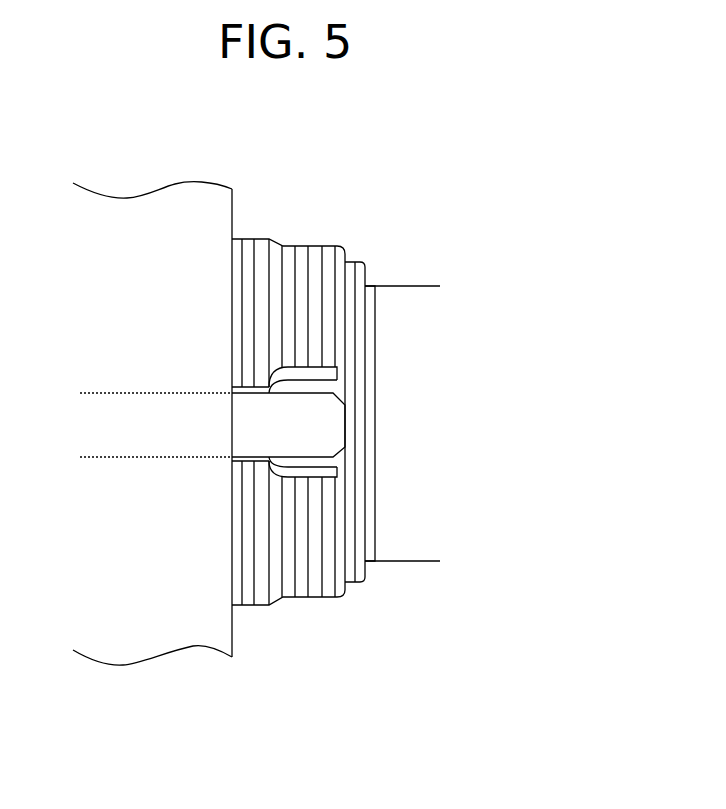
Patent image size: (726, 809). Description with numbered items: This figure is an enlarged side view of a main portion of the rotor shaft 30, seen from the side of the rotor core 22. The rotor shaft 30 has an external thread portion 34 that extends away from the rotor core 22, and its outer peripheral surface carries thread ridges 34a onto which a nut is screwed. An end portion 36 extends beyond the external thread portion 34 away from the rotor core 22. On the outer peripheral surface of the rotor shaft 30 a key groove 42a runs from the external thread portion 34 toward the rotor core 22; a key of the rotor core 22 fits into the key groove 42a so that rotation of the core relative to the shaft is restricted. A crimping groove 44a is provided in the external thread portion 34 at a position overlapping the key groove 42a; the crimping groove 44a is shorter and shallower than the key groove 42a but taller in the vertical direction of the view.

The rotor core 22 is at (158, 232).
The rotor shaft 30 is at (492, 306).
The external thread portion 34 is at (277, 240).
The thread ridges 34a is at (335, 278).
The end portion 36 is at (407, 303).
The key groove 42a is at (323, 420).
The crimping groove 44a is at (323, 462).